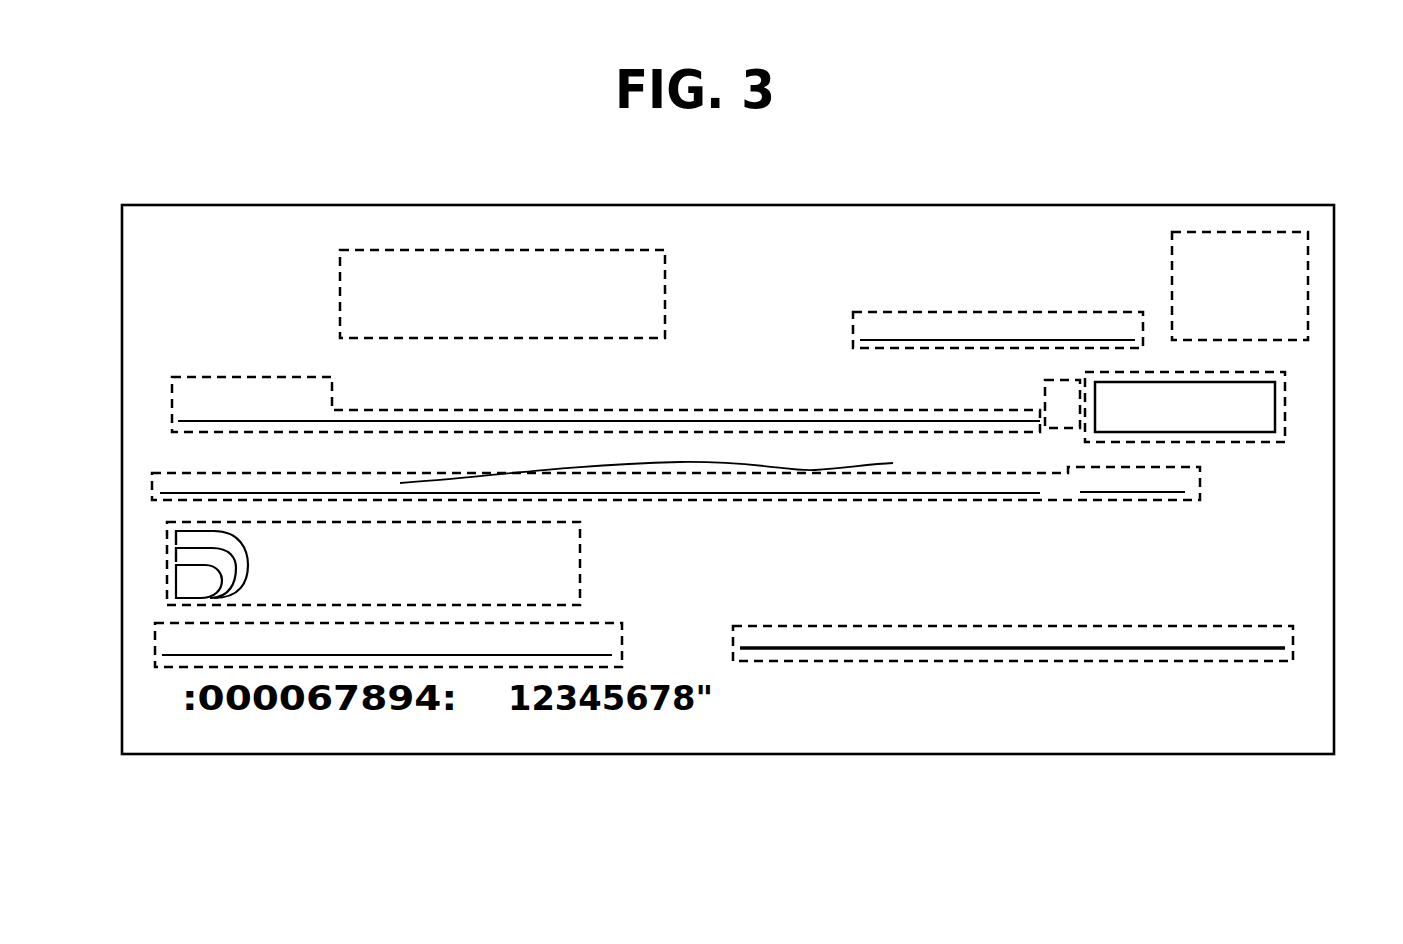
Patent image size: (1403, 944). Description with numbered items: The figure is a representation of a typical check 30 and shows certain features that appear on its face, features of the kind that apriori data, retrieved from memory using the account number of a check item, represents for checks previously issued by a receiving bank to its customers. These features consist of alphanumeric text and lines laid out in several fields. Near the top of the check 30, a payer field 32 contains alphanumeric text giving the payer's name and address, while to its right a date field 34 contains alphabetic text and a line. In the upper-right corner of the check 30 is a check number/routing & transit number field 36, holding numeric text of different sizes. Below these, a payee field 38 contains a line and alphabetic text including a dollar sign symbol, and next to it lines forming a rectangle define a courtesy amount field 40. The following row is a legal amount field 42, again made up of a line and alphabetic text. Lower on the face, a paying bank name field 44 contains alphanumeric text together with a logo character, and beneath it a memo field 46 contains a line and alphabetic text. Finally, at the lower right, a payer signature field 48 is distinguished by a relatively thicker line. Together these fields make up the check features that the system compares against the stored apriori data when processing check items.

The check 30 is at (918, 205).
The payer field 32 is at (411, 250).
The date field 34 is at (1020, 312).
The check number/routing & transit number field 36 is at (1235, 232).
The payee field 38 is at (172, 396).
The courtesy amount field 40 is at (1285, 398).
The legal amount field 42 is at (152, 495).
The paying bank name field 44 is at (167, 562).
The memo field 46 is at (155, 655).
The payer signature field 48 is at (1293, 638).